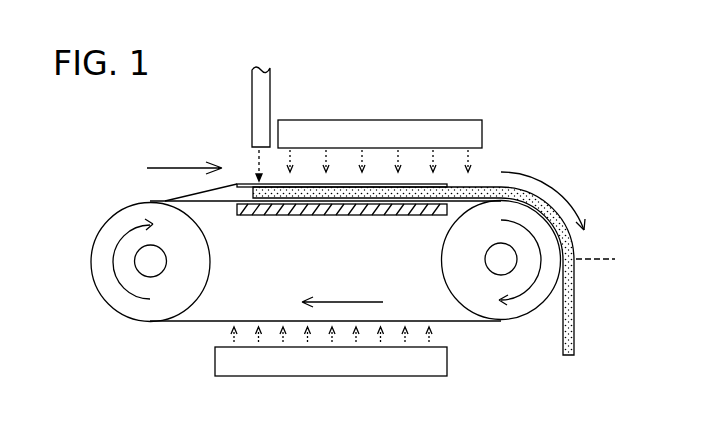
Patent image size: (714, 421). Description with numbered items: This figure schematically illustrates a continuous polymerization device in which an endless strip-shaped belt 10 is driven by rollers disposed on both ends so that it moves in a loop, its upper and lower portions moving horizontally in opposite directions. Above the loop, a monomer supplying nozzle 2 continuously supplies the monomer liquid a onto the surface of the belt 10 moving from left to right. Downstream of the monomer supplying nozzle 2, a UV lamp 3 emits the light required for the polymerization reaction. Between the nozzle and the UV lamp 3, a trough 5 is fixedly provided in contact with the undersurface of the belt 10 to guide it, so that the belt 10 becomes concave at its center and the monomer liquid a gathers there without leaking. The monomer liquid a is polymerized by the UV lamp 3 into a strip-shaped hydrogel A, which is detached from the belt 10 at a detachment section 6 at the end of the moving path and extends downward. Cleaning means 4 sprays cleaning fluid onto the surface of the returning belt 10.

The monomer supplying nozzle 2 is at (258, 92).
The UV lamp 3 is at (375, 123).
The cleaning means 4 is at (358, 367).
The trough 5 is at (350, 205).
The detachment section 6 is at (580, 258).
The endless strip-shaped belt 10 is at (215, 201).
The monomer liquid a is at (257, 173).
The strip-shaped hydrogel A is at (573, 323).